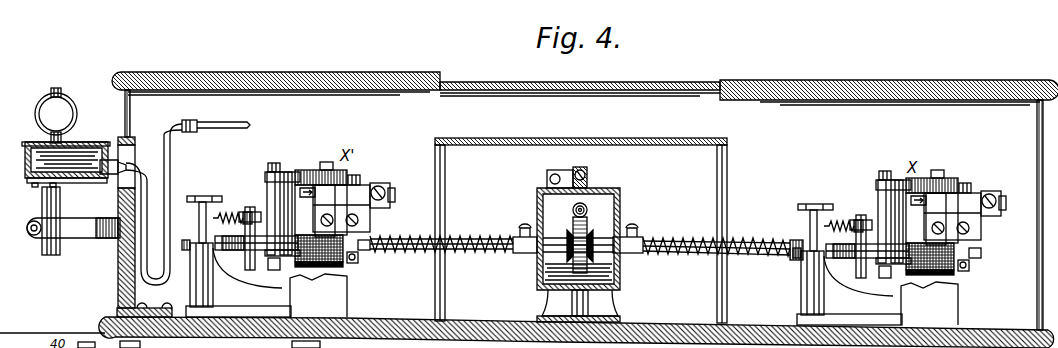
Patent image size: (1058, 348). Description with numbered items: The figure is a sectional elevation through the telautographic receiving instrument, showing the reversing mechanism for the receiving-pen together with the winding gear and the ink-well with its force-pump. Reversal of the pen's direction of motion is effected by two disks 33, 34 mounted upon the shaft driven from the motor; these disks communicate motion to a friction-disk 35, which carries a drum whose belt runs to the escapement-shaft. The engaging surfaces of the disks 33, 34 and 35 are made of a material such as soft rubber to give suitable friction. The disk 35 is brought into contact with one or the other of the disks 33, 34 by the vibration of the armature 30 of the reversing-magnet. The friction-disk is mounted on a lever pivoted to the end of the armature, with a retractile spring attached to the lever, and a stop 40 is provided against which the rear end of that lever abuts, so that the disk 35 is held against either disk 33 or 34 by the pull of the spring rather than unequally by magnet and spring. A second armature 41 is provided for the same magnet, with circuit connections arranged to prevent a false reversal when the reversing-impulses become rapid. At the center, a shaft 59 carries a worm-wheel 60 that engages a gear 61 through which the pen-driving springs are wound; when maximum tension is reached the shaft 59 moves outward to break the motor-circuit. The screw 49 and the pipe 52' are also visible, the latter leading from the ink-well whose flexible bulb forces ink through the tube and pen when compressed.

The armature 30 is at (274, 198).
The disk 33 is at (624, 299).
The disk 34 is at (542, 260).
The friction-disk 35 is at (562, 242).
The stop 40 is at (250, 212).
The second armature 41 is at (650, 218).
The screw 49 is at (380, 190).
The pipe 52' is at (216, 134).
The shaft 59 is at (573, 211).
The worm-wheel 60 is at (586, 191).
The gear 61 is at (578, 248).